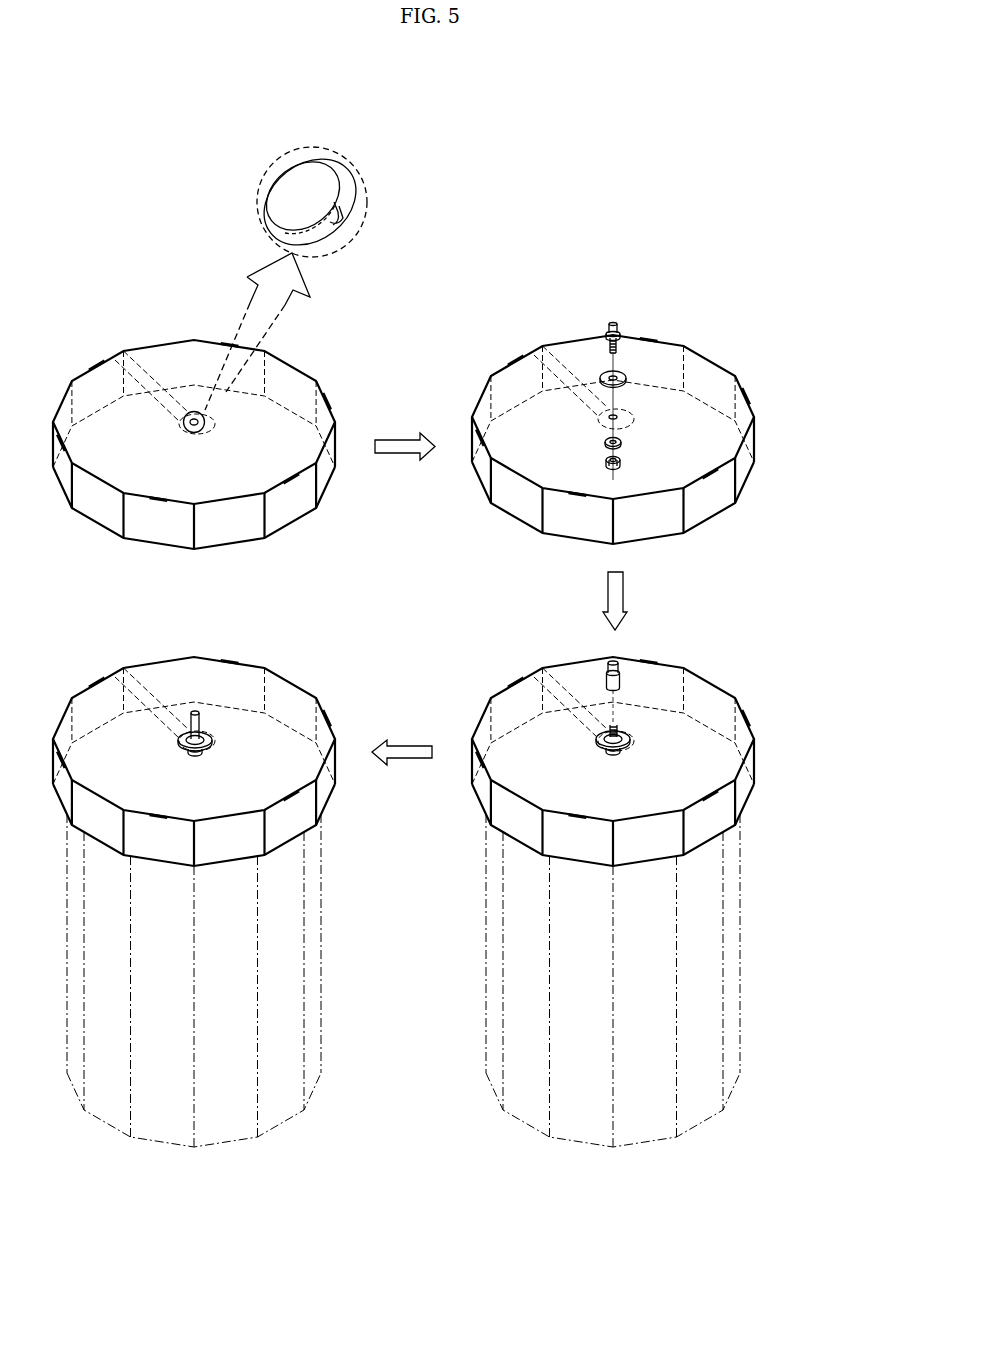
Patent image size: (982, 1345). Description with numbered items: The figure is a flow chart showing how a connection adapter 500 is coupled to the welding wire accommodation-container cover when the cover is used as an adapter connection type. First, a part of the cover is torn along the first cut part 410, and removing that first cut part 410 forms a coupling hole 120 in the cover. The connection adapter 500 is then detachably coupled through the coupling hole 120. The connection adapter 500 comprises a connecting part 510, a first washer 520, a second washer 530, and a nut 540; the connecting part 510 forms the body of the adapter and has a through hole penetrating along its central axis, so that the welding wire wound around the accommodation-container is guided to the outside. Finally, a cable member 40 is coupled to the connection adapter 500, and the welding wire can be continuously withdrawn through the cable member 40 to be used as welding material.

The first cut part 410 is at (343, 168).
The coupling hole 120 is at (334, 202).
The connection adapter 500 is at (707, 335).
The connecting part 510 is at (618, 330).
The first washer 520 is at (624, 376).
The second washer 530 is at (622, 440).
The nut 540 is at (622, 463).
The cable member 40 is at (623, 682).